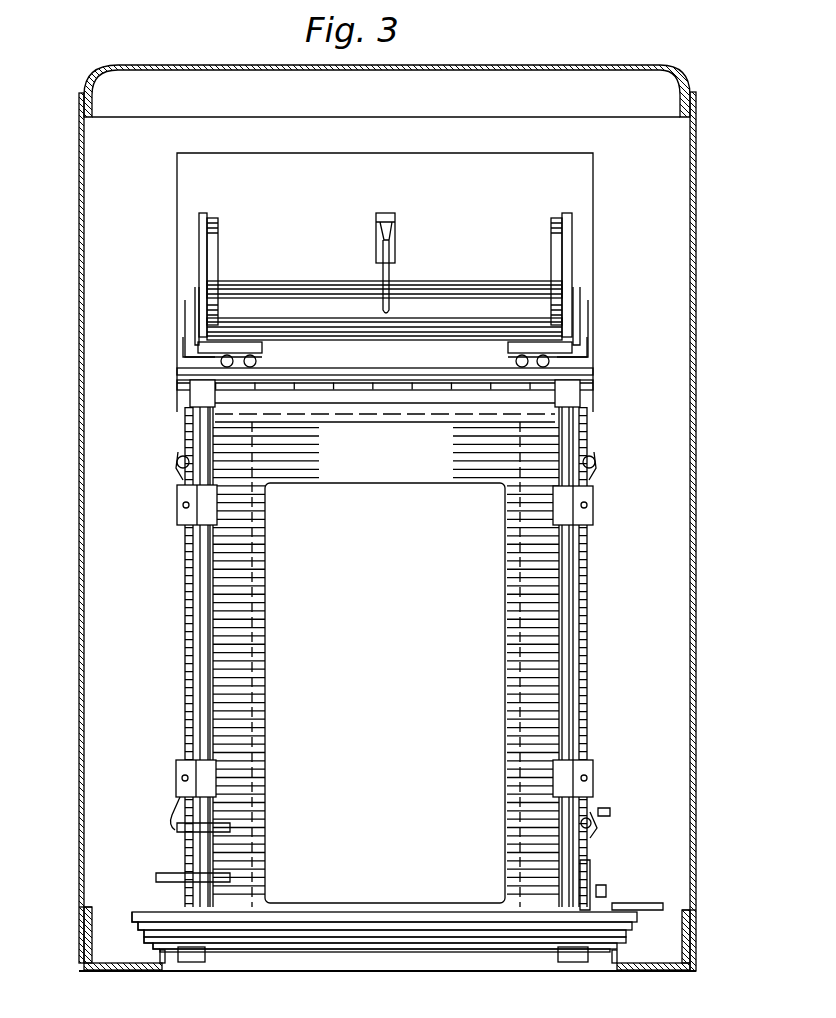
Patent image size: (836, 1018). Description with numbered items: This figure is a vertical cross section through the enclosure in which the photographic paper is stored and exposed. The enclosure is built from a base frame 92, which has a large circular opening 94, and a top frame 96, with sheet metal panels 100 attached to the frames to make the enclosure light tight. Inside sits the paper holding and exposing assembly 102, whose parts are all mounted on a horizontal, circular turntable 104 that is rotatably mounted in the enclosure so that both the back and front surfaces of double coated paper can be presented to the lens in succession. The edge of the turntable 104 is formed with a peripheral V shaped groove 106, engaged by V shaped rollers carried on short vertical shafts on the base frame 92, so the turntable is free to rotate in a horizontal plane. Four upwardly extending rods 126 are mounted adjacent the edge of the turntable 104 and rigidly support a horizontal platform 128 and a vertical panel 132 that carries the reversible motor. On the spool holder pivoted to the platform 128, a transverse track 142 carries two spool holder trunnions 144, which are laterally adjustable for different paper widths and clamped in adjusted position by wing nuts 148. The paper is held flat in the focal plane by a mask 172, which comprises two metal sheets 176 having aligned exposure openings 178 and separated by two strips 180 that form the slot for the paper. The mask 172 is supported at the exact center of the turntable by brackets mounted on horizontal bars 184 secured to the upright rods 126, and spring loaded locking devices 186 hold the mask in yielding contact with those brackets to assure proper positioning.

The top frame 96 is at (188, 65).
The sheet metal panels 100 is at (80, 530).
The vertical panel 132 is at (512, 176).
The spool holder trunnions 144 is at (200, 248).
The transverse track 142 is at (186, 340).
The wing nuts 148 is at (252, 362).
The horizontal platform 128 is at (180, 371).
The metal sheets 176 is at (479, 458).
The upwardly extending rods 126 is at (200, 619).
The strips 180 is at (241, 622).
The exposure openings 178 is at (360, 506).
The mask 172 is at (418, 468).
The horizontal bars 184 is at (178, 511).
The spring loaded locking devices 186 is at (179, 455).
The paper holding and exposing assembly 102 is at (607, 820).
The turntable 104 is at (346, 913).
The peripheral V shaped groove 106 is at (133, 922).
The base frame 92 is at (131, 971).
The circular opening 94 is at (265, 966).